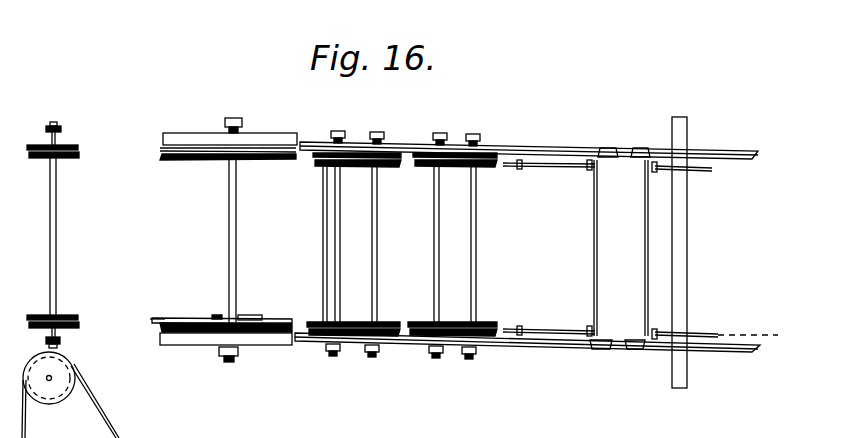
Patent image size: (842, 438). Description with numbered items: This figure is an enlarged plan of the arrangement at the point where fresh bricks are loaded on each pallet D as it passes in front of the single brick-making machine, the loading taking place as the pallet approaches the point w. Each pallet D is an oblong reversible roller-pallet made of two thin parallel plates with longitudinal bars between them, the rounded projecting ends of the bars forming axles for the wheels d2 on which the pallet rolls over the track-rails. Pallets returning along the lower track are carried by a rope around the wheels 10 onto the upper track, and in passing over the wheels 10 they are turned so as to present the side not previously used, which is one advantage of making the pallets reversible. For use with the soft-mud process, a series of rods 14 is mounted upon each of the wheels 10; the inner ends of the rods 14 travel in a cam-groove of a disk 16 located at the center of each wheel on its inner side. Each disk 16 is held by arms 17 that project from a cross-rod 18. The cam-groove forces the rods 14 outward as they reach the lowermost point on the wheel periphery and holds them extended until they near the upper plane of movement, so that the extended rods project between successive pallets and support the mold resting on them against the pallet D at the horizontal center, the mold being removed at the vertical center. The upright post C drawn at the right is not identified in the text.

The wheels 10 is at (212, 246).
The rods 14 is at (222, 308).
The disk 16 is at (218, 316).
The arms 17 is at (261, 307).
The cross-rod 18 is at (273, 241).
The point of loading w is at (152, 319).
The wheels d2 is at (609, 152).
The pallet D is at (621, 248).
The standard post C is at (661, 349).